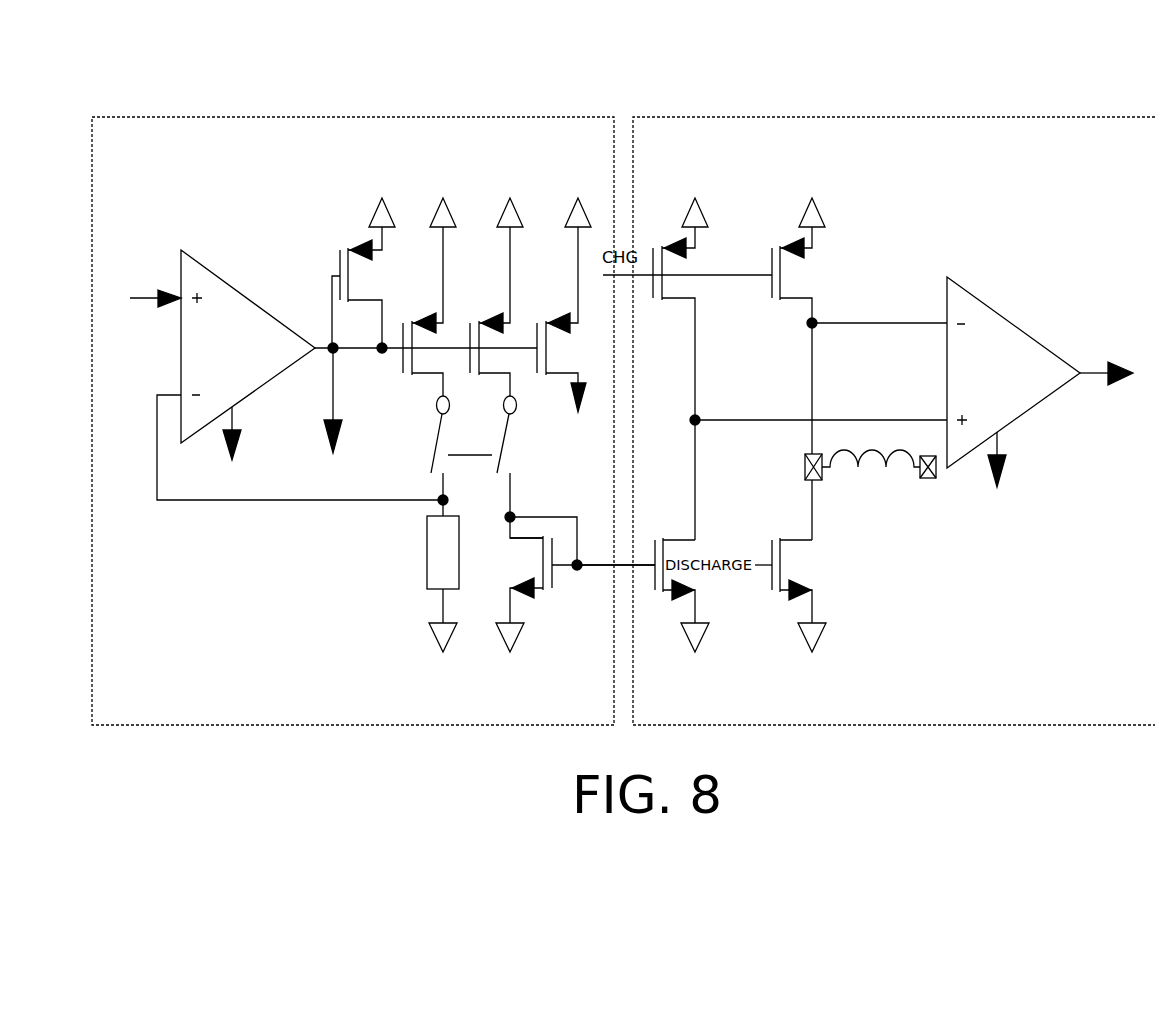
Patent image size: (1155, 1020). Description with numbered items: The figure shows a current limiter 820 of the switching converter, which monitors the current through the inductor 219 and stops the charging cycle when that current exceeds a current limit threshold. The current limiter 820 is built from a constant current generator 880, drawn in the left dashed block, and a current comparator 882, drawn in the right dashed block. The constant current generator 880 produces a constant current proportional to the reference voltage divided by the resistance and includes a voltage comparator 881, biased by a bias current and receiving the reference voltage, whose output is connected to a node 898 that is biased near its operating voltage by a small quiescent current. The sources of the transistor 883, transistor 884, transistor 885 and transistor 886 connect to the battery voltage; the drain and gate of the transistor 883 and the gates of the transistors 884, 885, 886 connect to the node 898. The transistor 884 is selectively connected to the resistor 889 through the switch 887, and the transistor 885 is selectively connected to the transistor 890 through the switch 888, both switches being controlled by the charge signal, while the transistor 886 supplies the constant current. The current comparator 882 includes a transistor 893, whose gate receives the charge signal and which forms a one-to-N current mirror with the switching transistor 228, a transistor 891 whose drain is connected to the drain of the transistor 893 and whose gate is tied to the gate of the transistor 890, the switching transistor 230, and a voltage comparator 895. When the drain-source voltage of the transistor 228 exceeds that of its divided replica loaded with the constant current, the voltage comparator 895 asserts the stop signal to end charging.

The current limiter 820 is at (108, 81).
The constant current generator 880 is at (312, 117).
The current comparator 882 is at (767, 117).
The voltage comparator 881 is at (207, 270).
The transistor 883 is at (362, 251).
The transistor 884 is at (418, 323).
The transistor 885 is at (486, 323).
The transistor 886 is at (562, 321).
The switch 887 is at (437, 448).
The switch 888 is at (502, 457).
The resistor 889 is at (425, 556).
The transistor 890 is at (518, 590).
The transistor 891 is at (676, 595).
The transistor 893 is at (680, 250).
The voltage comparator 895 is at (980, 298).
The node 898 is at (330, 352).
The transistor 228 is at (793, 250).
The transistor 230 is at (811, 590).
The inductor 219 is at (855, 466).